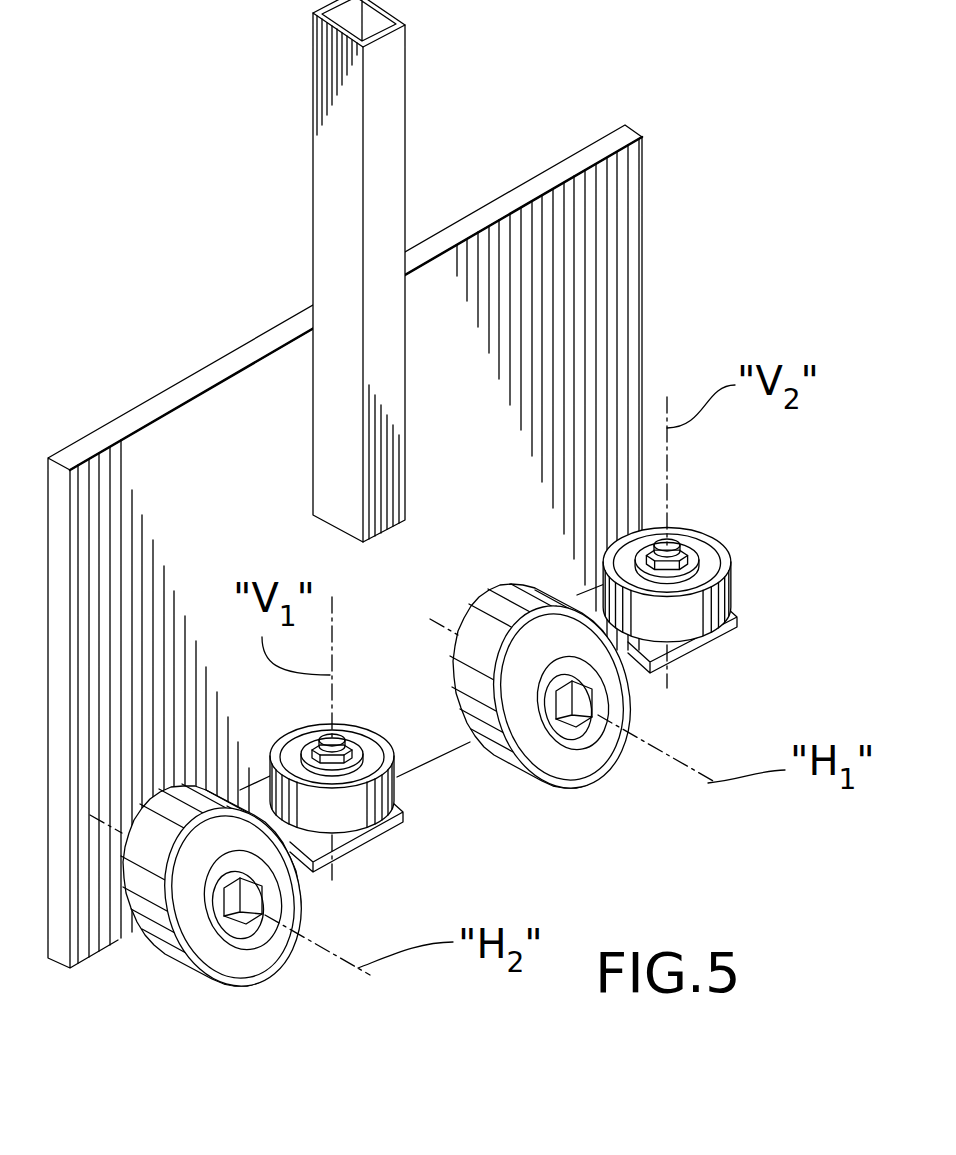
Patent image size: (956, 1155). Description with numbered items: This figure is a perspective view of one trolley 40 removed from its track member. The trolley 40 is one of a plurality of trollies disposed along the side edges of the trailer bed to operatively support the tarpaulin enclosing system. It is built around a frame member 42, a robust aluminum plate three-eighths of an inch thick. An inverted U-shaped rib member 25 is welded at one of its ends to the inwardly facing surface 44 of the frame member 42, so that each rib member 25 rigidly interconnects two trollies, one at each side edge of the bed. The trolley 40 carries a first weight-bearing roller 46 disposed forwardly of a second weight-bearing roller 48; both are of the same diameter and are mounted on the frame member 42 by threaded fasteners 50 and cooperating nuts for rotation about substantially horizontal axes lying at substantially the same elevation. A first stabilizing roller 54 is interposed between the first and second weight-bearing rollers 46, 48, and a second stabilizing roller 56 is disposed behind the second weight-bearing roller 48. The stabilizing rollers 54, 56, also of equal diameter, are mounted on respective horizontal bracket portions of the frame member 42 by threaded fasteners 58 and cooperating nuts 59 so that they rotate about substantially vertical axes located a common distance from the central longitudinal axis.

The rib member 25 is at (380, 118).
The trolley 40 is at (770, 218).
The frame member 42 is at (345, 546).
The inwardly facing surface 44 is at (487, 519).
The first weight-bearing roller 46 is at (563, 763).
The second weight-bearing roller 48 is at (233, 957).
The threaded fastener 50 is at (258, 899).
The first stabilizing roller 54 is at (355, 807).
The second stabilizing roller 56 is at (705, 607).
The threaded fastener 58 is at (342, 737).
The cooperating nut 59 is at (338, 862).